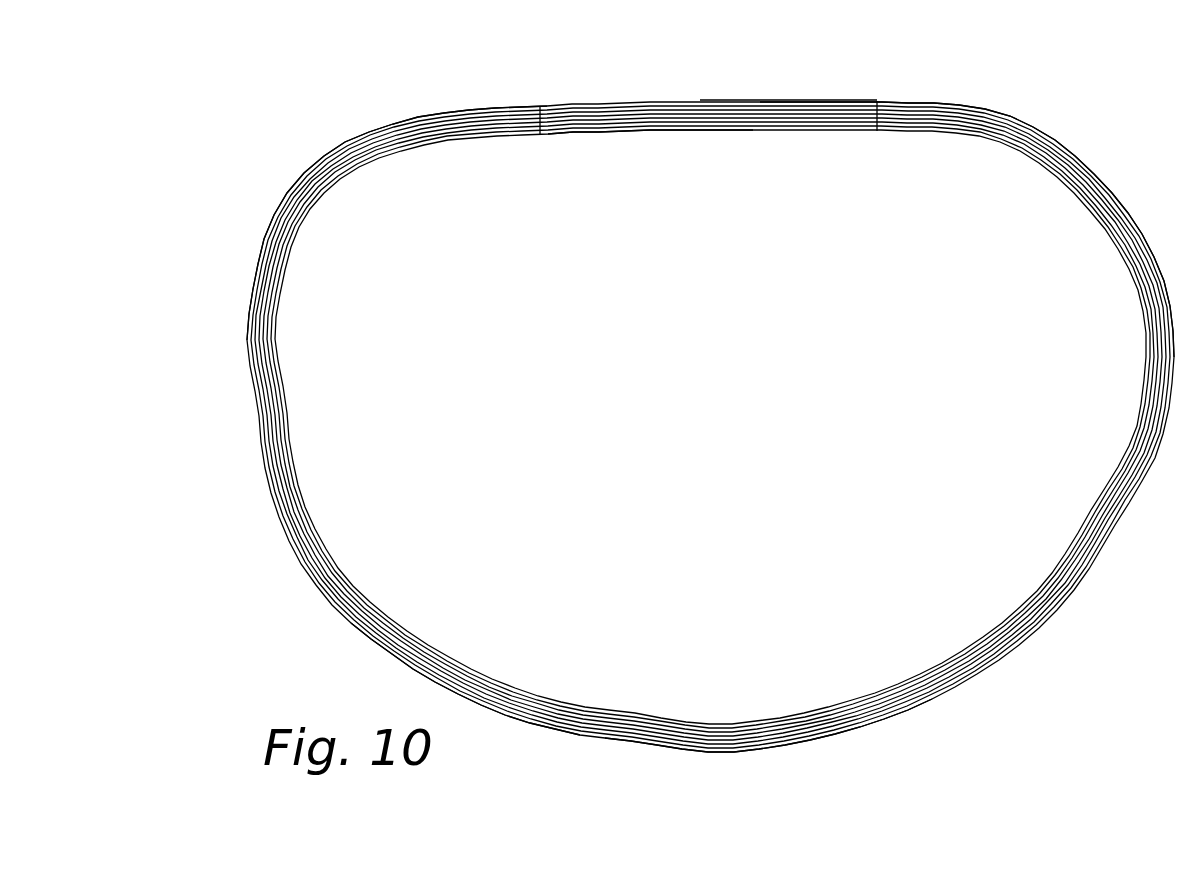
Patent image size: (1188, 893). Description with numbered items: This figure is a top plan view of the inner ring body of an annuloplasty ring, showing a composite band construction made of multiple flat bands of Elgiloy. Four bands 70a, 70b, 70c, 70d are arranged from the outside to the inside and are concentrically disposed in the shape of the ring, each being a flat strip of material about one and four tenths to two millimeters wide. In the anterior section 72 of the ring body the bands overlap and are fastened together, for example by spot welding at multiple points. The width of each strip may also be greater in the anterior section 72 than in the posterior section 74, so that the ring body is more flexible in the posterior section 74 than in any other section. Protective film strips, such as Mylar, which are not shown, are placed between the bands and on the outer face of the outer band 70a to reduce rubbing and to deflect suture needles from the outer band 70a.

The outer band 70a is at (785, 99).
The second band 70b is at (905, 100).
The third band 70c is at (478, 134).
The inner band 70d is at (633, 131).
The anterior section 72 is at (591, 90).
The posterior section 74 is at (673, 705).